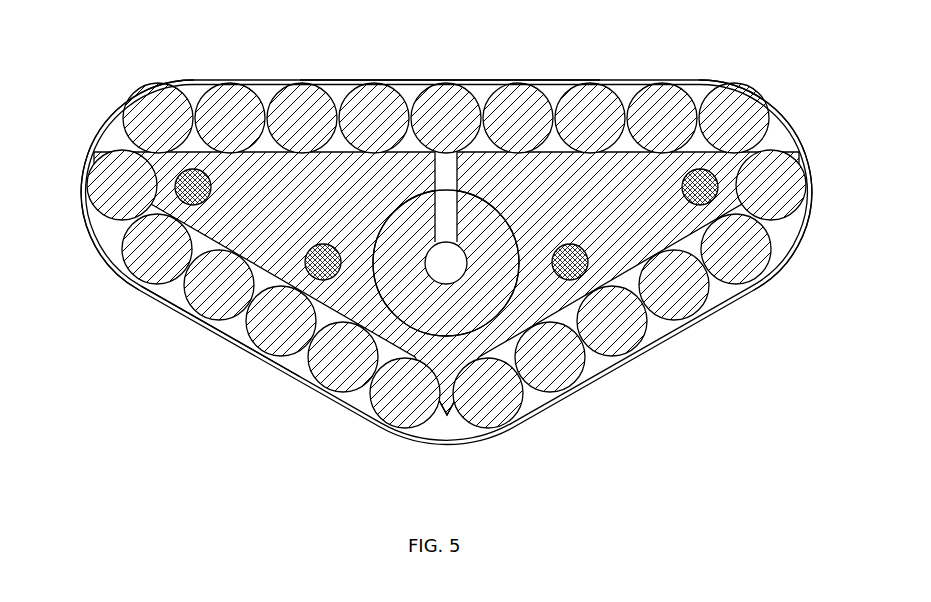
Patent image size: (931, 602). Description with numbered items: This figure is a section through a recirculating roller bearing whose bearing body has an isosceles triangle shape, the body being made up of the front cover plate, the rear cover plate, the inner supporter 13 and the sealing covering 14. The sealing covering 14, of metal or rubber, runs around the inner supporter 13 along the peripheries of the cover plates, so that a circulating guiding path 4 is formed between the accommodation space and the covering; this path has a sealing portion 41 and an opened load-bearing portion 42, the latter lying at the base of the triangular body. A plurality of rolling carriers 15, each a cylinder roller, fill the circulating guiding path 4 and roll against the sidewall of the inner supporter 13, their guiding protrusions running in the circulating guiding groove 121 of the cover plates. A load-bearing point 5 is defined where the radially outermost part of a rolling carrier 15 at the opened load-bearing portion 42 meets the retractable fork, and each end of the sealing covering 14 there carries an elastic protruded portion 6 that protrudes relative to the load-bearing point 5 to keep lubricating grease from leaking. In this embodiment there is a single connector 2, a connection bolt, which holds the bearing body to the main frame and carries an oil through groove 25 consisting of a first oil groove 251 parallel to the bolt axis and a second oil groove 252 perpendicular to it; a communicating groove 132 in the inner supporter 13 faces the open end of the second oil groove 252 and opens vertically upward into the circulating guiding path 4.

The connector 2 is at (419, 227).
The circulating guiding path 4 is at (105, 237).
The load-bearing point 5 is at (298, 82).
The protruded portion 6 is at (170, 80).
The inner supporter 13 is at (650, 227).
The sealing covering 14 is at (172, 305).
The rolling carrier 15 is at (768, 287).
The oil through groove 25 is at (446, 298).
The sealing portion 41 is at (222, 340).
The opened load-bearing portion 42 is at (442, 78).
The circulating guiding groove 121 is at (447, 413).
The communicating groove 132 is at (441, 232).
The first oil groove 251 is at (595, 369).
The second oil groove 252 is at (617, 350).